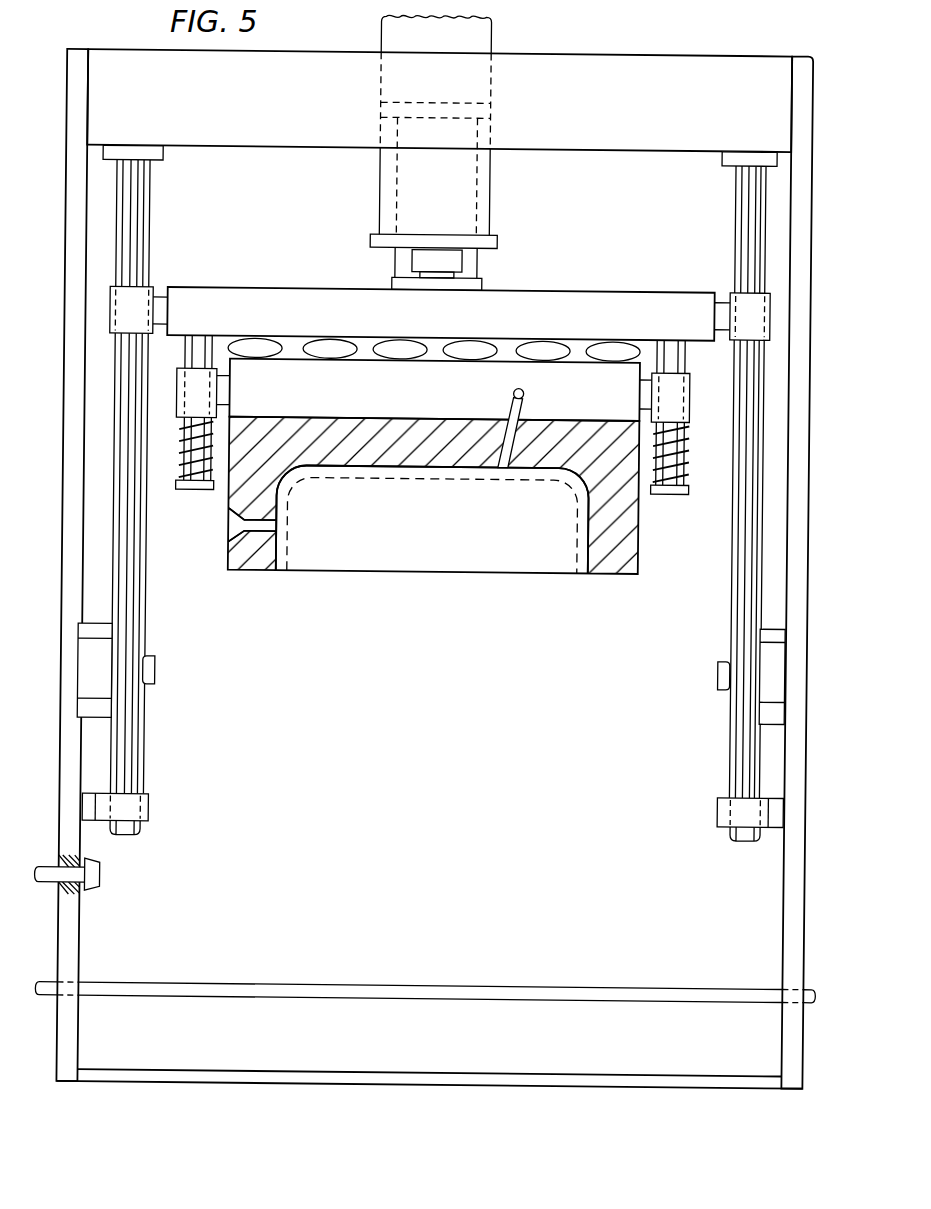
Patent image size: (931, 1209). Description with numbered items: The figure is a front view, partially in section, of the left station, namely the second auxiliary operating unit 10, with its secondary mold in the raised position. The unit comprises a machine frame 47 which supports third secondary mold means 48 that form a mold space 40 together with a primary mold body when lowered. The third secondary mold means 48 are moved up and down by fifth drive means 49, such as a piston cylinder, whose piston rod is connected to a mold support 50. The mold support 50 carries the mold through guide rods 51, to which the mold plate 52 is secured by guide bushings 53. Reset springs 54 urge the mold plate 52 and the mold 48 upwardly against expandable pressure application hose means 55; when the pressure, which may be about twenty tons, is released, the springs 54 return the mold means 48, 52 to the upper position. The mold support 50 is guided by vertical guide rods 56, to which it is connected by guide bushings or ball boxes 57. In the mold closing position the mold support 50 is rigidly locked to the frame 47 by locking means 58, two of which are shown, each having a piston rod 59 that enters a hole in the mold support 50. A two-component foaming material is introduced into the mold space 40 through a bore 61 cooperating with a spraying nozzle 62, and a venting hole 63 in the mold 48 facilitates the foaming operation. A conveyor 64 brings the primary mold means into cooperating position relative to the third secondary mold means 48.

The second auxiliary operating unit 10 is at (444, 547).
The mold space 40 is at (543, 474).
The machine frame 47 is at (804, 181).
The third secondary mold means 48 is at (630, 534).
The fifth drive means 49 is at (490, 179).
The mold support 50 is at (565, 299).
The guide rods 51 is at (678, 356).
The mold plate 52 is at (608, 405).
The guide bushings 53 is at (183, 406).
The reset springs 54 is at (182, 468).
The expandable pressure application hose means 55 is at (265, 348).
The vertical guide rods 56 is at (139, 199).
The guide bushings or ball boxes 57 is at (142, 302).
The locking means 58 is at (89, 669).
The piston rod 59 is at (158, 672).
The bore 61 is at (229, 531).
The spraying nozzle 62 is at (103, 873).
The venting hole 63 is at (512, 393).
The conveyor 64 is at (652, 987).